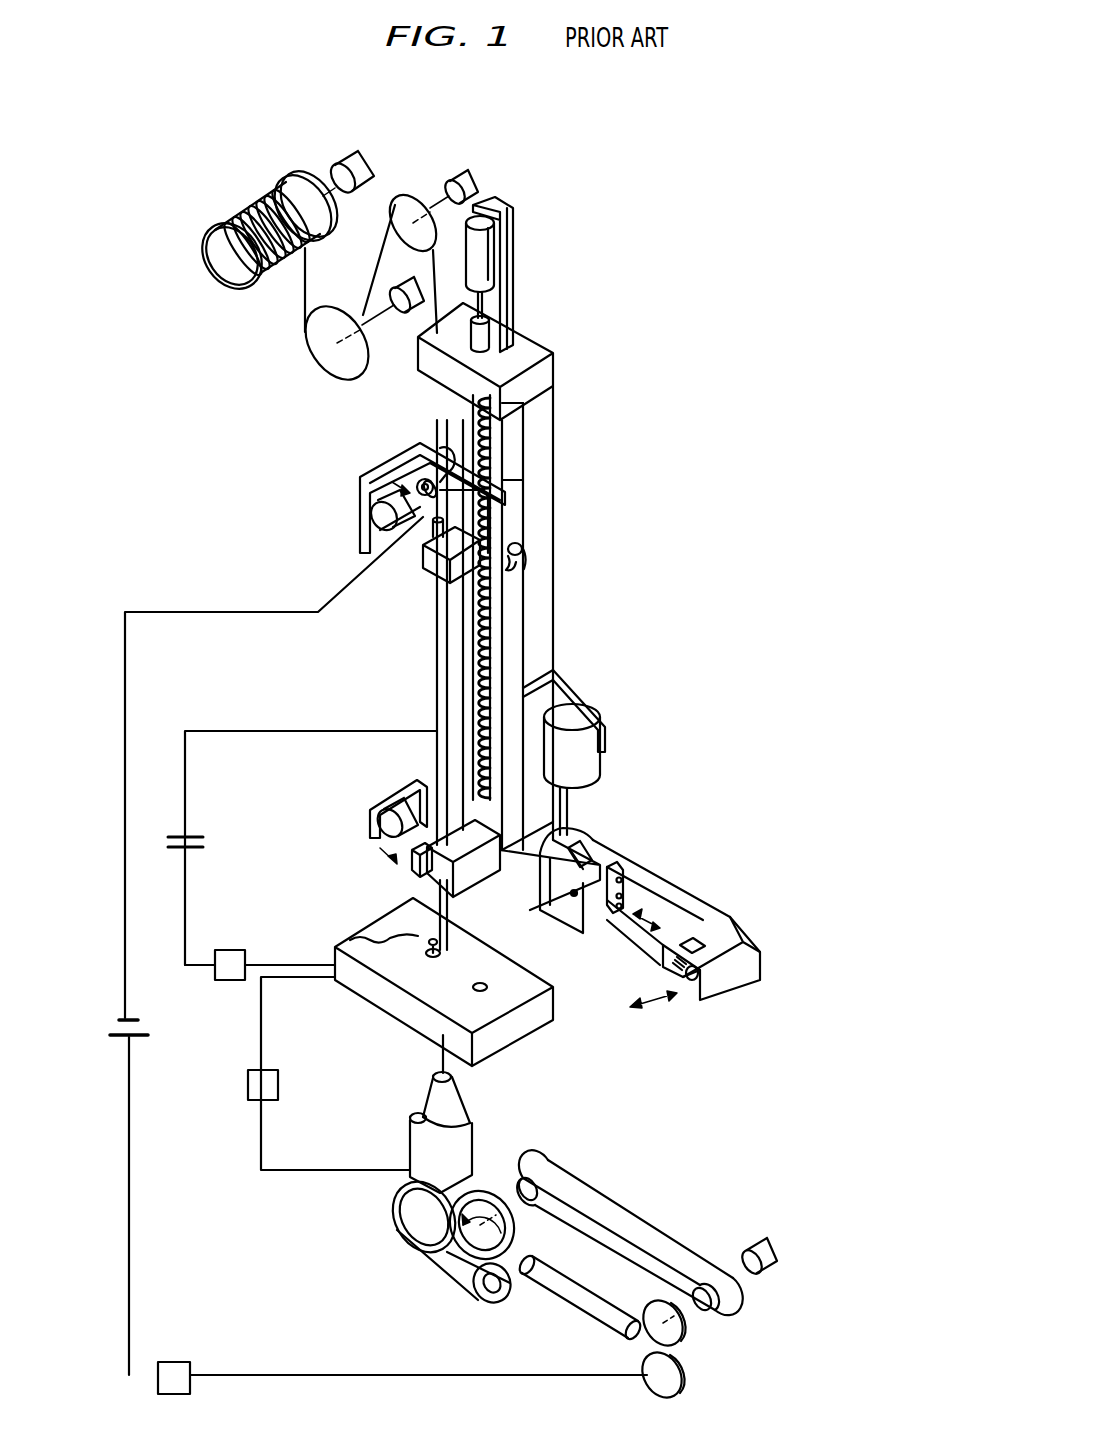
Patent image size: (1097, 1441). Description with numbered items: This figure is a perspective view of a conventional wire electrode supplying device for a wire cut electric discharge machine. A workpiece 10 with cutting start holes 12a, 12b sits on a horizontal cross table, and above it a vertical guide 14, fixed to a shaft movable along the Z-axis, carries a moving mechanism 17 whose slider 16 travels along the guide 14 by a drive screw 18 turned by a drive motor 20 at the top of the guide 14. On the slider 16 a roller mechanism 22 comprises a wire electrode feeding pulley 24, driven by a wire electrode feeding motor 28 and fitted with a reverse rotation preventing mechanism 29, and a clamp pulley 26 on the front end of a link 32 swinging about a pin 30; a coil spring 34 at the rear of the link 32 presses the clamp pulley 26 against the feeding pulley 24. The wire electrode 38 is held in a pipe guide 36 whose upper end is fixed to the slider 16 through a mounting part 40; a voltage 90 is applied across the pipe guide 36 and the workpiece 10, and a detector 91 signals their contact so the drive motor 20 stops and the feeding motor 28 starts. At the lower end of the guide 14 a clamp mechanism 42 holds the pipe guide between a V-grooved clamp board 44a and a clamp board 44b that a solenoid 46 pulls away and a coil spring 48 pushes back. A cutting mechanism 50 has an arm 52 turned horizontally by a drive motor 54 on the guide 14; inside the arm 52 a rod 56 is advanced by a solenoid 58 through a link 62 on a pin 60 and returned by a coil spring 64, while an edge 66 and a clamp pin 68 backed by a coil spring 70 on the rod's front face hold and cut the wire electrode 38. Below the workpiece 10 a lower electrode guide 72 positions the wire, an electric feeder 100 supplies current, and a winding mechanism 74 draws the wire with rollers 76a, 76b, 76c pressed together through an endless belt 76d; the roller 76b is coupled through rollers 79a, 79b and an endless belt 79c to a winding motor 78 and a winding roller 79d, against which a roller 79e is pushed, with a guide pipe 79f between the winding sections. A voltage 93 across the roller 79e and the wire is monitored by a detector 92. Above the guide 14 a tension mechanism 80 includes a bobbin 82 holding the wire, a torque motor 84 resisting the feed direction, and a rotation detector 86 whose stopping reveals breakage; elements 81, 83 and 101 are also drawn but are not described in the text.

The workpiece 10 is at (375, 1000).
The cutting start hole 12a is at (350, 940).
The cutting start hole 12b is at (490, 987).
The guide 14 is at (554, 360).
The slider 16 is at (358, 480).
The moving mechanism 17 is at (530, 528).
The drive screw 18 is at (495, 450).
The drive motor 20 is at (499, 207).
The roller mechanism 22 is at (396, 487).
The wire electrode feeding pulley 24 is at (419, 467).
The clamp pulley 26 is at (440, 442).
The wire electrode feeding motor 28 is at (404, 522).
The reverse rotation preventing mechanism 29 is at (382, 511).
The pin 30 is at (433, 566).
The link 32 is at (500, 497).
The coil spring 34 is at (525, 570).
The pipe guide 36 is at (437, 672).
The wire electrode 38 is at (433, 953).
The mounting part 40 is at (430, 536).
The clamp mechanism 42 is at (413, 885).
The clamp board 44a is at (470, 880).
The clamp board 44b is at (410, 858).
The solenoid 46 is at (380, 822).
The coil spring 48 is at (410, 795).
The cutting mechanism 50 is at (720, 860).
The arm 52 is at (590, 847).
The drive motor 54 is at (573, 727).
The rod 56 is at (640, 939).
The solenoid 58 is at (600, 848).
The pin 60 is at (570, 893).
The link 62 is at (623, 865).
The coil spring 64 is at (607, 887).
The edge 66 is at (705, 946).
The clamp pin 68 is at (693, 980).
The coil spring 70 is at (680, 975).
The lower electrode guide 72 is at (432, 1098).
The winding mechanism 74 is at (598, 1175).
The roller 76a is at (395, 1212).
The roller 76b is at (488, 1195).
The roller 76c is at (470, 1298).
The endless belt 76d is at (430, 1270).
The winding motor 78 is at (778, 1253).
The roller 79a is at (550, 1170).
The roller 79b is at (730, 1305).
The endless belt 79c is at (645, 1215).
The winding roller 79d is at (688, 1330).
The roller 79e is at (678, 1377).
The guide pipe 79f is at (555, 1290).
The tension mechanism 80 is at (377, 203).
The pulley 81 is at (318, 356).
The bobbin 82 is at (234, 294).
The bolt 83 is at (407, 318).
The torque motor 84 is at (348, 156).
The rotation detector 86 is at (468, 179).
The voltage 90 is at (207, 846).
The detector 91 is at (232, 950).
The detector 92 is at (194, 1362).
The voltage 93 is at (152, 1030).
The electric feeder 100 is at (415, 1140).
The control box 101 is at (248, 1090).